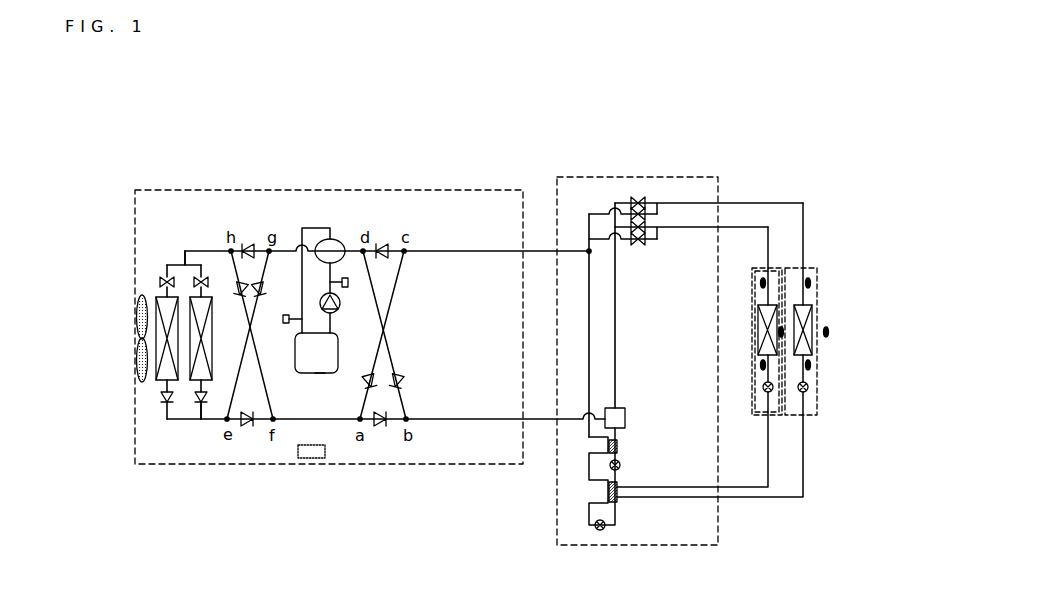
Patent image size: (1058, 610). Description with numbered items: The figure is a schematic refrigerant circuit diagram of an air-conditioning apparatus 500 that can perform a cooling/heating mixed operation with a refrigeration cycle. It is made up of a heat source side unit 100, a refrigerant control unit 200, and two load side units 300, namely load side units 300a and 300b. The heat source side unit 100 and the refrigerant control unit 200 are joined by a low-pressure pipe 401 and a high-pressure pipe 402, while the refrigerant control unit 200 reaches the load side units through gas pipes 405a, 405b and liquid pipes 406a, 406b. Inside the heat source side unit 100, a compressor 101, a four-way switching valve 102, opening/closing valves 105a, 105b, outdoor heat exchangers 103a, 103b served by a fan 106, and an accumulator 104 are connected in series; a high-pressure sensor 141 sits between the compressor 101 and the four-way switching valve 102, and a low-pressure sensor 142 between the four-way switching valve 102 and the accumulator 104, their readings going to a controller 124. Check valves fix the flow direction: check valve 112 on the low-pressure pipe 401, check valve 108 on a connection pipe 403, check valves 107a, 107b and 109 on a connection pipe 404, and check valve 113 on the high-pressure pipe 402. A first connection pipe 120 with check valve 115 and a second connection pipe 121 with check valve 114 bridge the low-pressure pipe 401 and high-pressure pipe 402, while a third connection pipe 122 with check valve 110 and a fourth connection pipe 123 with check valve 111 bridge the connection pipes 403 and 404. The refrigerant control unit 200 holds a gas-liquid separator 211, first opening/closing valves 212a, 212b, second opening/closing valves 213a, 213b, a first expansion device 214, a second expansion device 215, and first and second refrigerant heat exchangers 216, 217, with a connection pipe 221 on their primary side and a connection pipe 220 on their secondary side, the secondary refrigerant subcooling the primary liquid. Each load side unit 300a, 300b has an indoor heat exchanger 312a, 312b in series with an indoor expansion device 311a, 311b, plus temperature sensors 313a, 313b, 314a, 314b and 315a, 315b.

The heat source side unit 100 is at (345, 464).
The compressor 101 is at (334, 340).
The four-way switching valve 102 is at (340, 240).
The outdoor heat exchanger 103a is at (156, 388).
The outdoor heat exchanger 103b is at (196, 392).
The accumulator 104 is at (318, 373).
The opening/closing valve 105a is at (162, 278).
The opening/closing valve 105b is at (198, 276).
The fan 106 is at (136, 312).
The check valve 107a is at (160, 408).
The check valve 107b is at (198, 408).
The check valve 108 is at (246, 246).
The check valve 109 is at (252, 426).
The check valve 110 is at (232, 294).
The check valve 111 is at (260, 298).
The check valve 112 is at (383, 248).
The check valve 113 is at (380, 426).
The check valve 114 is at (374, 376).
The check valve 115 is at (402, 380).
The first connection pipe 120 is at (404, 398).
The second connection pipe 121 is at (392, 300).
The third connection pipe 122 is at (266, 392).
The fourth connection pipe 123 is at (238, 378).
The controller 124 is at (303, 461).
The high-pressure sensor 141 is at (346, 288).
The low-pressure sensor 142 is at (284, 312).
The refrigerant control unit 200 is at (670, 546).
The gas-liquid separator 211 is at (618, 406).
The first opening/closing valve 212a is at (648, 230).
The first opening/closing valve 212b is at (640, 208).
The second opening/closing valve 213a is at (642, 248).
The second opening/closing valve 213b is at (650, 202).
The first expansion device 214 is at (622, 466).
The second expansion device 215 is at (598, 532).
The first refrigerant heat exchanger 216 is at (618, 445).
The second refrigerant heat exchanger 217 is at (620, 497).
The connection pipe 220 is at (589, 312).
The connection pipe 221 is at (618, 344).
The load side unit 300 is at (818, 278).
The load side unit 300a is at (752, 366).
The load side unit 300b is at (812, 364).
The indoor expansion device 311a is at (756, 404).
The indoor expansion device 311b is at (818, 402).
The indoor heat exchanger 312a is at (756, 320).
The indoor heat exchanger 312b is at (814, 310).
The temperature sensor 313a is at (760, 282).
The temperature sensor 313b is at (810, 278).
The temperature sensor 314a is at (760, 388).
The temperature sensor 314b is at (810, 386).
The temperature sensor 315a is at (786, 328).
The temperature sensor 315b is at (830, 334).
The low-pressure pipe 401 is at (457, 250).
The high-pressure pipe 402 is at (470, 434).
The connection pipe 403 is at (200, 248).
The connection pipe 404 is at (200, 398).
The gas pipe 405a is at (768, 248).
The gas pipe 405b is at (803, 232).
The liquid pipe 406a is at (768, 488).
The liquid pipe 406b is at (804, 466).
The air-conditioning apparatus 500 is at (277, 180).